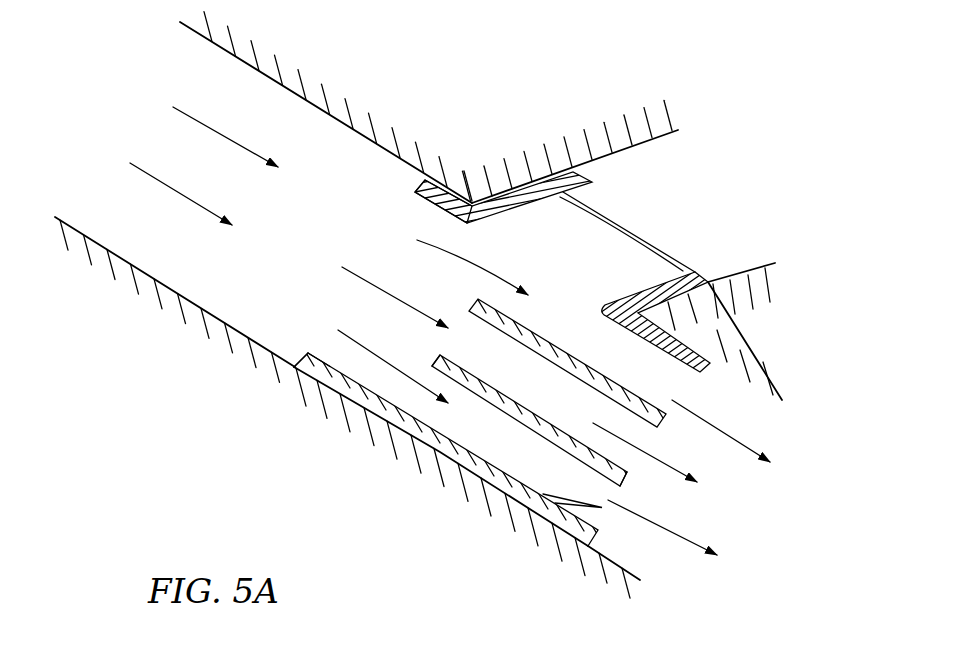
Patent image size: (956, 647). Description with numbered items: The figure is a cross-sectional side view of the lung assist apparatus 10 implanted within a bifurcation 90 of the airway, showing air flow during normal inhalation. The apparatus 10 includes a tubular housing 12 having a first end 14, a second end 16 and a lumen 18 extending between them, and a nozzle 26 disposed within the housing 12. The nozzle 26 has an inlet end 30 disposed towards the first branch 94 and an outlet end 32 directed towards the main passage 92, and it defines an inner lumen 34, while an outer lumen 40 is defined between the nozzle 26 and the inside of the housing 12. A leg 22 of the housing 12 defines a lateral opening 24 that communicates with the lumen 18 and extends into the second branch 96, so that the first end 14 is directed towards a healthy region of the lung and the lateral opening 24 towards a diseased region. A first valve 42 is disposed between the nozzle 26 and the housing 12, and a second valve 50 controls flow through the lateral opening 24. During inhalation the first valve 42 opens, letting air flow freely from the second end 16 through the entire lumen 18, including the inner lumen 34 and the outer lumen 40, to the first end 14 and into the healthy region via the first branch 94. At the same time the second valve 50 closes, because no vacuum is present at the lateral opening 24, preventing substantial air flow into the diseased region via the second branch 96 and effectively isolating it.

The lung assist apparatus 10 is at (459, 436).
The housing 12 is at (425, 455).
The first end 14 is at (604, 563).
The second end 16 is at (293, 368).
The lumen 18 is at (320, 353).
The leg 22 is at (567, 170).
The lateral opening 24 is at (510, 221).
The nozzle 26 is at (536, 412).
The inlet end 30 is at (608, 480).
The outlet end 32 is at (433, 363).
The inner lumen 34 is at (566, 402).
The outer lumen 40 is at (517, 468).
The first valve 42 is at (600, 508).
The second valve 50 is at (638, 236).
The bifurcation 90 is at (395, 435).
The main passage 92 is at (122, 260).
The first branch 94 is at (782, 400).
The second branch 96 is at (775, 263).